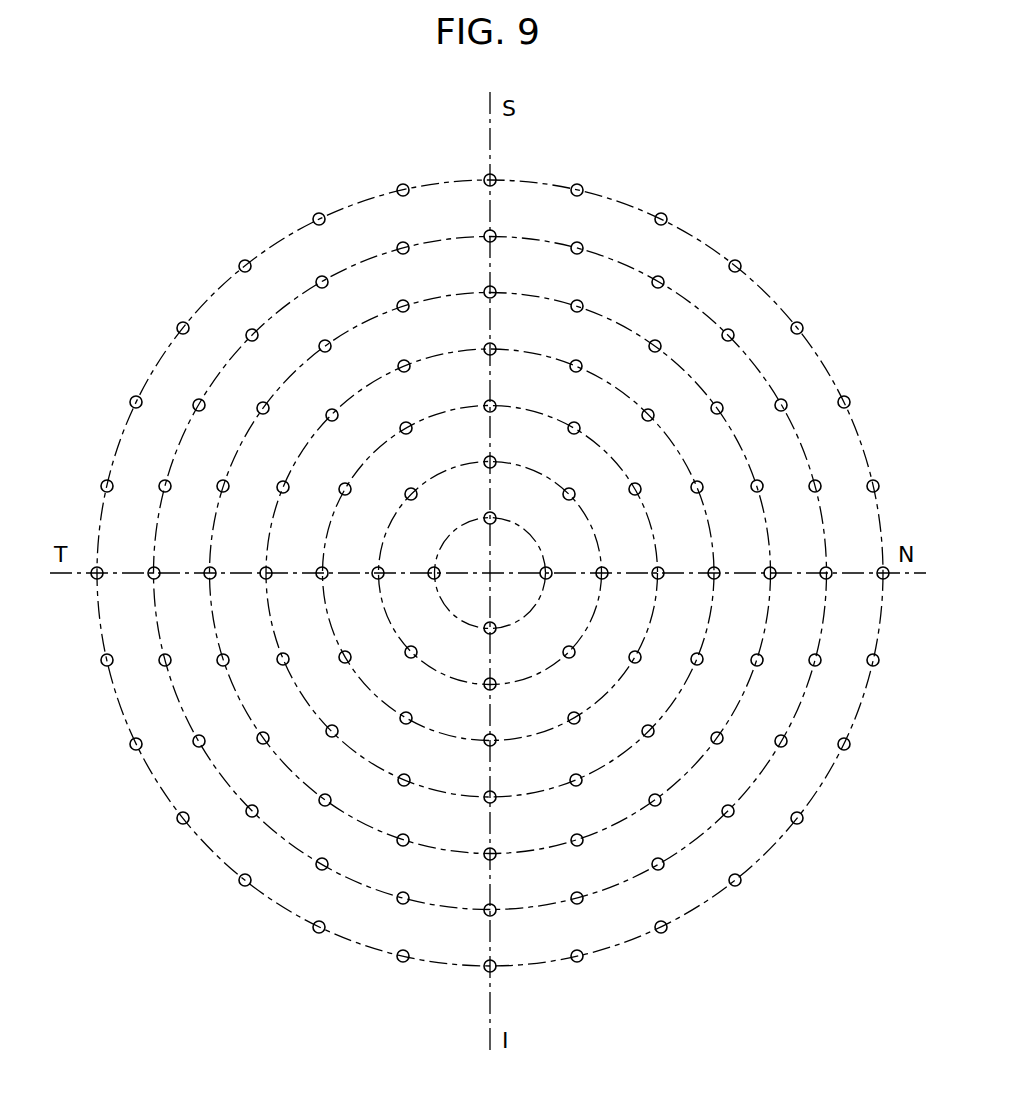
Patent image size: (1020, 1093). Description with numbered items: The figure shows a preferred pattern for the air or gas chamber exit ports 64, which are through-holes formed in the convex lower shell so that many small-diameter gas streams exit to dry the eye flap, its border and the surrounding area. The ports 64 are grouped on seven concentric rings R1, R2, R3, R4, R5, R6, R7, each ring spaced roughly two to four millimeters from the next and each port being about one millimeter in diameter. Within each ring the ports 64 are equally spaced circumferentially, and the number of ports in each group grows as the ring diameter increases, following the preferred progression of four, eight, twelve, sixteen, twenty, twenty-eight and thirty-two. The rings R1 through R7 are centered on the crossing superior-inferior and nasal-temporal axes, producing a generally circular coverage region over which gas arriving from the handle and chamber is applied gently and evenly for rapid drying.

The exit ports 64 is at (667, 218).
The first ring R1 is at (522, 621).
The second ring R2 is at (529, 682).
The third ring R3 is at (537, 739).
The fourth ring R4 is at (543, 797).
The fifth ring R5 is at (547, 856).
The sixth ring R6 is at (549, 914).
The seventh ring R7 is at (551, 967).